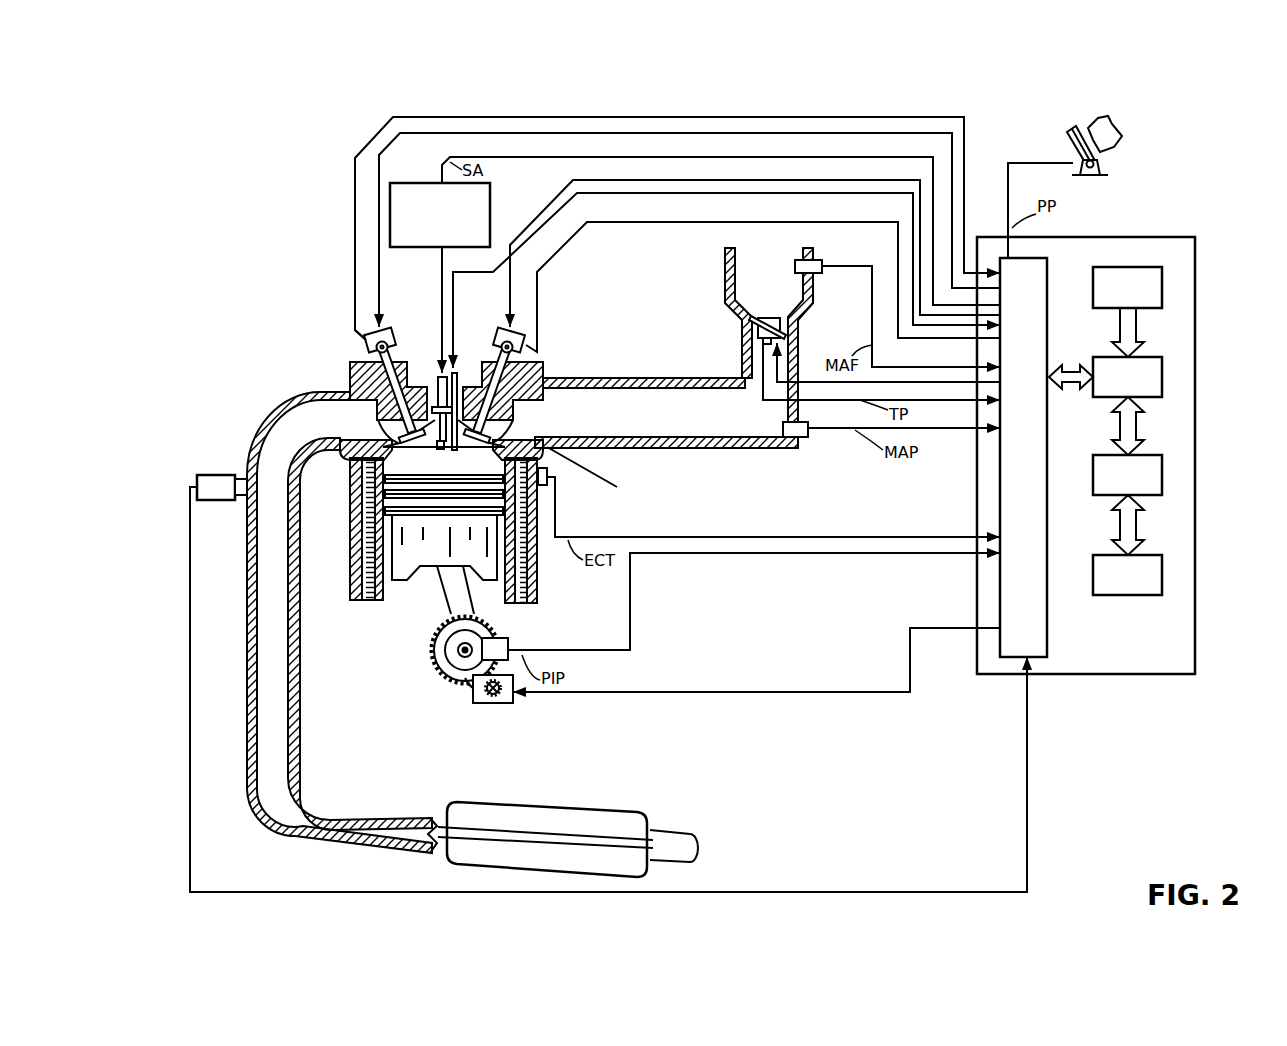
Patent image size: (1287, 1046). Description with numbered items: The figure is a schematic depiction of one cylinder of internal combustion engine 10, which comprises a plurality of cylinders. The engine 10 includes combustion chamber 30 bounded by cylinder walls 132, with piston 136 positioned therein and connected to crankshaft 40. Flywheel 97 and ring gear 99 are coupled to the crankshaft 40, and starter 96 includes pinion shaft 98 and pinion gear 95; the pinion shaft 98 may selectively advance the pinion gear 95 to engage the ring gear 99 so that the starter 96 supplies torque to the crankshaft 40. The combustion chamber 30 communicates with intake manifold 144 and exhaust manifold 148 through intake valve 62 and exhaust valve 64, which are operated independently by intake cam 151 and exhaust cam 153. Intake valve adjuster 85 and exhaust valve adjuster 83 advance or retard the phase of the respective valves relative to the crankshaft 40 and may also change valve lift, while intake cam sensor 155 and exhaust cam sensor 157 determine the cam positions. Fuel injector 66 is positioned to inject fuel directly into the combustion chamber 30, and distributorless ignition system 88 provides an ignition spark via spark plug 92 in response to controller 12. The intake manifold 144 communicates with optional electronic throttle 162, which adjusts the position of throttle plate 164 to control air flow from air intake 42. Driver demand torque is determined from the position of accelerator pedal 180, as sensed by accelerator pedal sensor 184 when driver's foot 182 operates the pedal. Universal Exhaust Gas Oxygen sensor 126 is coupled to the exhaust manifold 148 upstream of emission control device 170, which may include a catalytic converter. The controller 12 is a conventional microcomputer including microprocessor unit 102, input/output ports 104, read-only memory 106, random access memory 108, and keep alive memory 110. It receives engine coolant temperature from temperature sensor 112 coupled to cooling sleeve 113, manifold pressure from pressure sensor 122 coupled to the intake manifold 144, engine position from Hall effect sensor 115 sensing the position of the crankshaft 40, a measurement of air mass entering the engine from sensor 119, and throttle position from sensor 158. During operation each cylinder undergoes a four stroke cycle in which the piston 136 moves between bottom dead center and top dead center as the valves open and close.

The internal combustion engine 10 is at (290, 318).
The controller 12 is at (1185, 237).
The combustion chamber 30 is at (442, 462).
The crankshaft 40 is at (445, 675).
The air intake 42 is at (785, 342).
The intake valve 62 is at (498, 441).
The exhaust valve 64 is at (350, 396).
The fuel injector 66 is at (533, 458).
The exhaust valve adjuster 83 is at (382, 300).
The intake valve adjuster 85 is at (530, 356).
The distributorless ignition system 88 is at (403, 183).
The spark plug 92 is at (437, 398).
The pinion gear 95 is at (497, 703).
The starter 96 is at (513, 699).
The flywheel 97 is at (432, 656).
The pinion shaft 98 is at (483, 703).
The ring gear 99 is at (455, 686).
The microprocessor unit 102 is at (1163, 371).
The input/output ports 104 is at (1050, 266).
The read-only memory 106 is at (1163, 283).
The random access memory 108 is at (1163, 474).
The keep alive memory 110 is at (1163, 574).
The temperature sensor 112 is at (557, 480).
The cooling sleeve 113 is at (540, 557).
The Hall effect sensor 115 is at (508, 641).
The air mass sensor 119 is at (812, 274).
The pressure sensor 122 is at (805, 438).
The Universal Exhaust Gas Oxygen sensor 126 is at (197, 478).
The cylinder walls 132 is at (383, 592).
The piston 136 is at (428, 556).
The intake manifold 144 is at (666, 413).
The exhaust manifold 148 is at (339, 622).
The intake cam 151 is at (505, 340).
The exhaust cam 153 is at (386, 334).
The intake cam sensor 155 is at (528, 348).
The exhaust cam sensor 157 is at (366, 348).
The throttle position sensor 158 is at (742, 341).
The electronic throttle 162 is at (782, 325).
The throttle plate 164 is at (752, 323).
The emission control device 170 is at (458, 800).
The accelerator pedal 180 is at (1070, 140).
The driver's foot 182 is at (1120, 130).
The accelerator pedal sensor 184 is at (1098, 166).